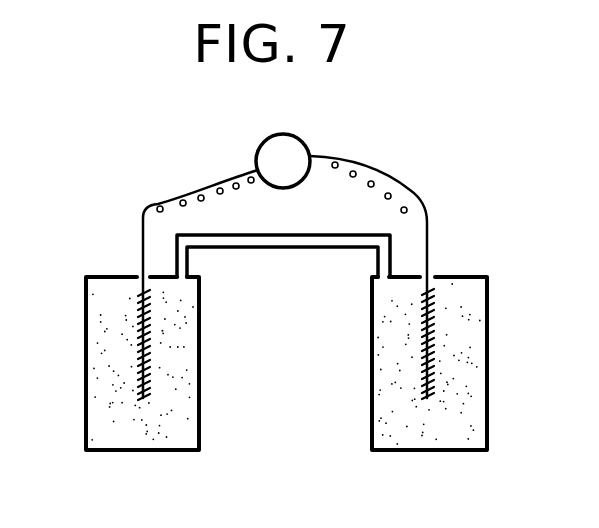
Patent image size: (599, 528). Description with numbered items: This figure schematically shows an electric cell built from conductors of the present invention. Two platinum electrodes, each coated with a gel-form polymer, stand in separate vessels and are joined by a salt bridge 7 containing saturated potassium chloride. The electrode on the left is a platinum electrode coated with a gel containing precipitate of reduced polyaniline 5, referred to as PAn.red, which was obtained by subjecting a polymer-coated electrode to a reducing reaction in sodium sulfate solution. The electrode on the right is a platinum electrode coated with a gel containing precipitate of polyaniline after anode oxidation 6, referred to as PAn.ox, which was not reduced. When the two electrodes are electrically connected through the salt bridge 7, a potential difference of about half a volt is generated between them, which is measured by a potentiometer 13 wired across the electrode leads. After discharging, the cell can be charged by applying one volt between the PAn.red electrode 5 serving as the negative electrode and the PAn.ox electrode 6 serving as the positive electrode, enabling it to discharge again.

The platinum electrode coated with a gel containing precipitate of reduced polyanili 5 is at (157, 452).
The platinum electrode coated with a gel containing precipitate of polyaniline after 6 is at (413, 453).
The salt bridge 7 is at (293, 250).
The potentiometer 13 is at (308, 140).